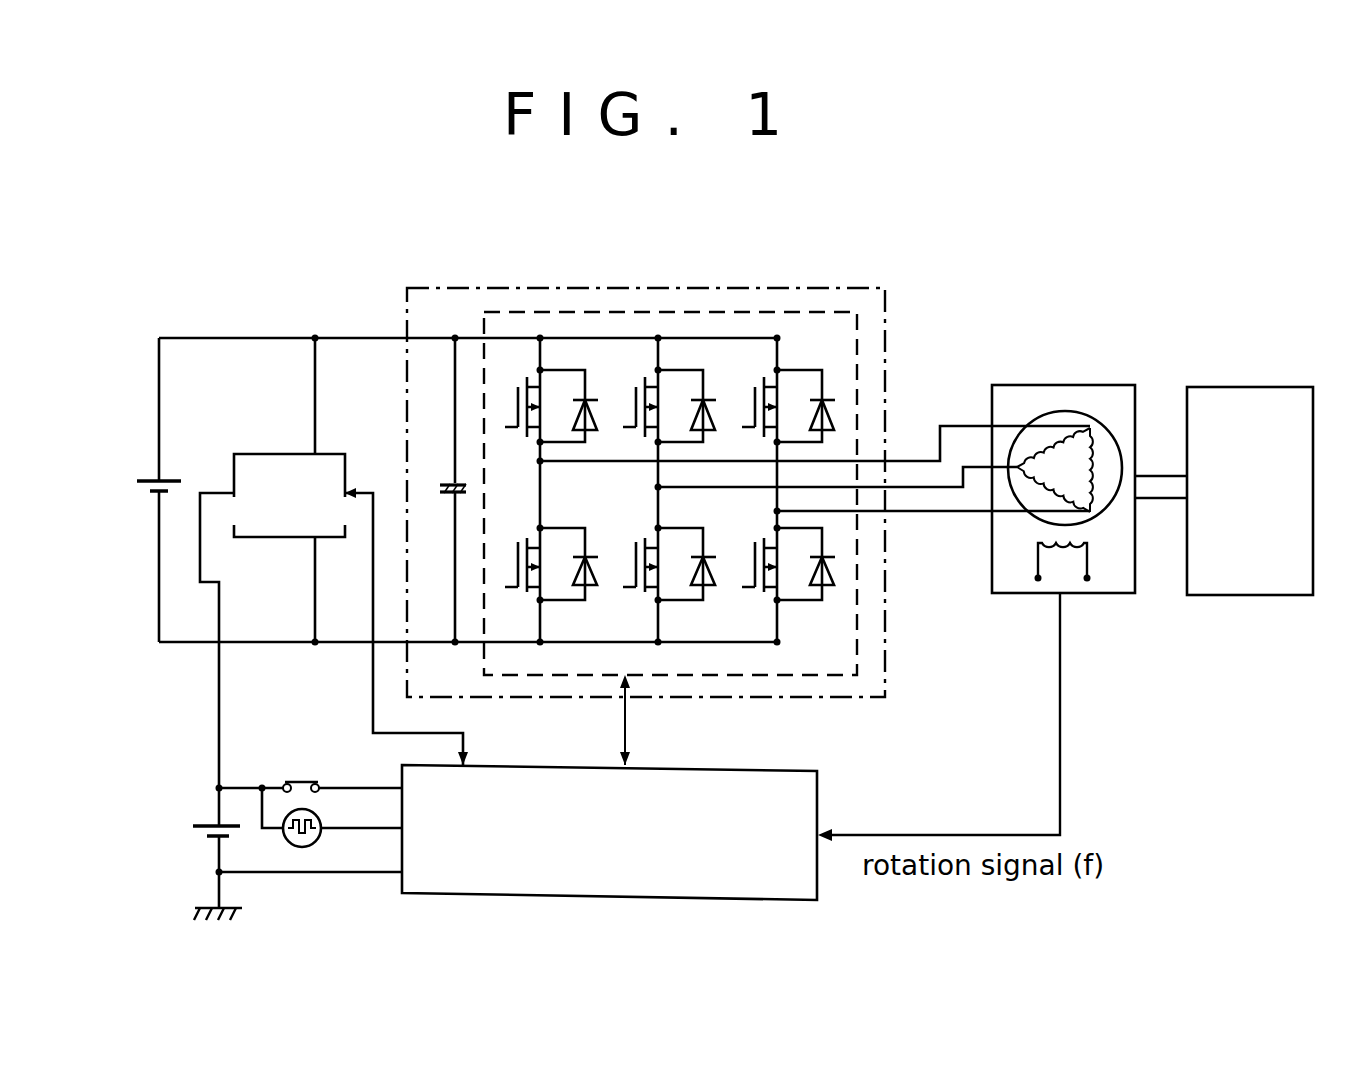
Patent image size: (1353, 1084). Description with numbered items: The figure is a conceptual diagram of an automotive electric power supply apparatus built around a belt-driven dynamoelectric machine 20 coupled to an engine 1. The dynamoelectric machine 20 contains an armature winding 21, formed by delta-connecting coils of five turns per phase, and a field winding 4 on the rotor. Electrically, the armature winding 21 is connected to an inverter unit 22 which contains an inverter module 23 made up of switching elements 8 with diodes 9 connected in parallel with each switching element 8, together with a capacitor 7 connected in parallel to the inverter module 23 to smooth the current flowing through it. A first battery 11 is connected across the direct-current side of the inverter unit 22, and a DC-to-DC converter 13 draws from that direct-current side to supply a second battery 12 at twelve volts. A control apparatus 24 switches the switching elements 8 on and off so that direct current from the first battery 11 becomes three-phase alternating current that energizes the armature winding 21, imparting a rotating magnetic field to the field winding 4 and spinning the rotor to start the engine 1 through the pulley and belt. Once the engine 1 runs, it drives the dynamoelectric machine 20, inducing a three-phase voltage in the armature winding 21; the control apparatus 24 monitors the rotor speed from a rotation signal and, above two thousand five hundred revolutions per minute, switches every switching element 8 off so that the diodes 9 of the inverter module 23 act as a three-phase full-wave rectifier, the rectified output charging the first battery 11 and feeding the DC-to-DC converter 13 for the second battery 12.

The engine 1 is at (1287, 380).
The field winding 4 is at (1105, 556).
The capacitor 7 is at (445, 475).
The switching elements 8 is at (517, 372).
The diodes 9 is at (595, 383).
The first battery 11 is at (178, 458).
The second battery 12 is at (203, 808).
The DC-to-DC converter 13 is at (283, 452).
The dynamoelectric machine 20 is at (1043, 385).
The armature winding 21 is at (1098, 444).
The inverter unit 22 is at (885, 288).
The inverter module 23 is at (857, 348).
The control apparatus 24 is at (822, 778).